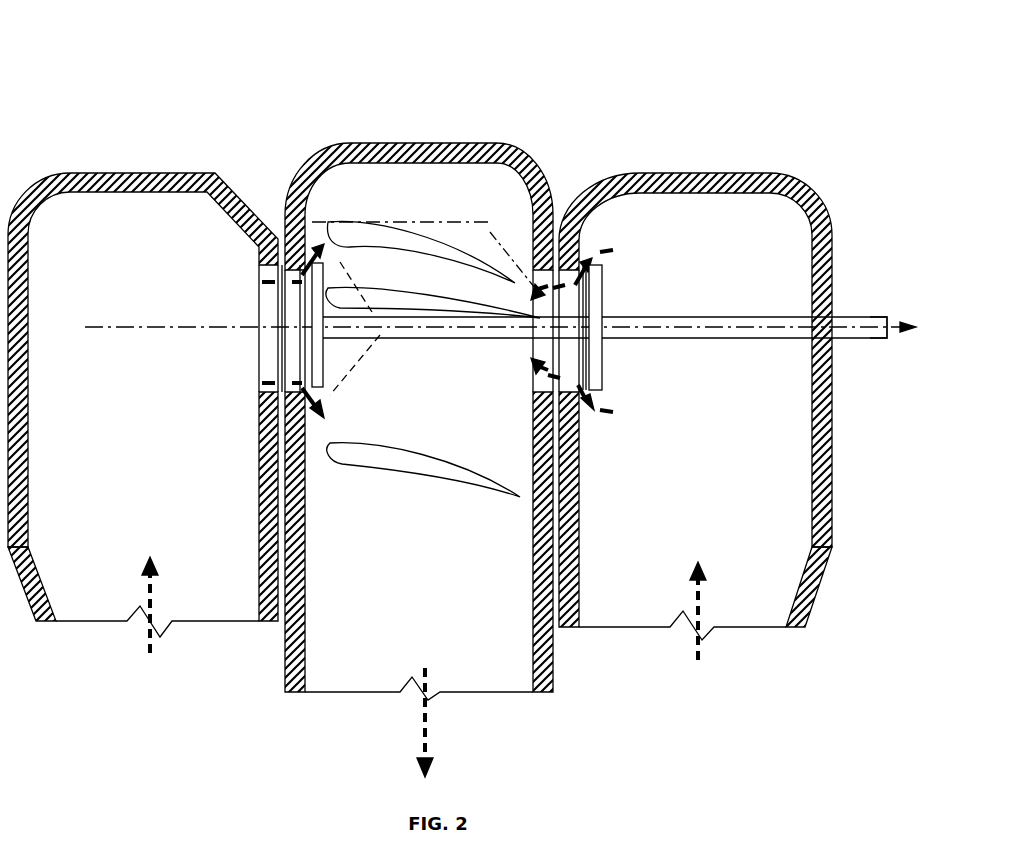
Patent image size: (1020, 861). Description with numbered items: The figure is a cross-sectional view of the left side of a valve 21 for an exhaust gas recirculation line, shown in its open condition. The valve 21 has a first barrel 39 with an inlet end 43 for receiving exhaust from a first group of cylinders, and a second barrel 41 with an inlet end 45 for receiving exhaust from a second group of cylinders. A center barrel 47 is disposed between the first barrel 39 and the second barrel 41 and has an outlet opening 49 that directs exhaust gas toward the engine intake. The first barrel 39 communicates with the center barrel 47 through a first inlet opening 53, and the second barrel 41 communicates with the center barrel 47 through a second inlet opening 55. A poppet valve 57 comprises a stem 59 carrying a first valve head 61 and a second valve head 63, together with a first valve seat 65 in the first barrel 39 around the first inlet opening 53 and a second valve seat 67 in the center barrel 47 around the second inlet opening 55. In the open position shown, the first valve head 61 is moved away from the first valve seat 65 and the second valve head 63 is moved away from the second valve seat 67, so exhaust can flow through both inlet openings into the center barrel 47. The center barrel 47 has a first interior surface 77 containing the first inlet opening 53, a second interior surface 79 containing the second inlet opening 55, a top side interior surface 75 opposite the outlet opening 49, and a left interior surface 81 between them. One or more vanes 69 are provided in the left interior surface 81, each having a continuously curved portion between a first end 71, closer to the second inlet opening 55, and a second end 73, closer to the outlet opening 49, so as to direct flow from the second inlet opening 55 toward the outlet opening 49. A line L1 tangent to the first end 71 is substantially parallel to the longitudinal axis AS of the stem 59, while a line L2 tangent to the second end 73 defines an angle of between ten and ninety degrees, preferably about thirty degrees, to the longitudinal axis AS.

The valve 21 is at (305, 113).
The first barrel 39 is at (695, 393).
The second barrel 41 is at (143, 392).
The inlet end 43 is at (740, 612).
The inlet end 45 is at (113, 607).
The center barrel 47 is at (419, 416).
The outlet opening 49 is at (390, 680).
The first inlet opening 53 is at (540, 371).
The second inlet opening 55 is at (275, 310).
The poppet valve 57 is at (500, 302).
The stem 59 is at (870, 340).
The first valve head 61 is at (600, 300).
The second valve head 63 is at (327, 387).
The first valve seat 65 is at (580, 280).
The second valve seat 67 is at (283, 355).
The vanes 69 is at (466, 259).
The first end 71 is at (333, 296).
The second end 73 is at (513, 282).
The top side interior surface 75 is at (365, 165).
The first interior surface 77 is at (533, 542).
The second interior surface 79 is at (305, 548).
The left interior surface 81 is at (415, 577).
The longitudinal axis AS is at (737, 333).
The line tangent to the first end L1 is at (395, 222).
The line tangent to the second end L2 is at (482, 232).